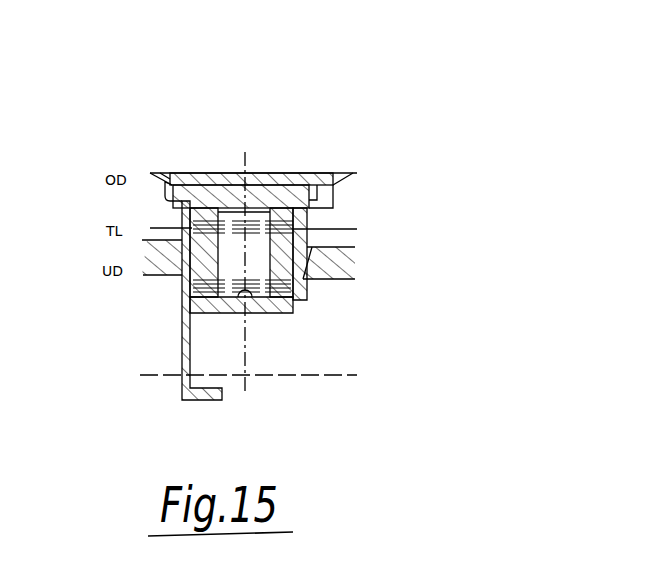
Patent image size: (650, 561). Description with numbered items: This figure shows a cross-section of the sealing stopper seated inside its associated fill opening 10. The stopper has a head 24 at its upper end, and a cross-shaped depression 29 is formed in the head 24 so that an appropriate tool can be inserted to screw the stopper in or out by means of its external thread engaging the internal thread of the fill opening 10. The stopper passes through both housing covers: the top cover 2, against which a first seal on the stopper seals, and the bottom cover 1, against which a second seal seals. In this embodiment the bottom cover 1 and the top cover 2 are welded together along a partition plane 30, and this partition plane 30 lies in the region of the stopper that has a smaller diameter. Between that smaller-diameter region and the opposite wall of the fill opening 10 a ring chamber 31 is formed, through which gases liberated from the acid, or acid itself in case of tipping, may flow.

The bottom cover 1 is at (340, 263).
The top cover 2 is at (337, 170).
The fill opening 10 is at (273, 384).
The head 24 is at (292, 186).
The cross-shaped depression 29 is at (218, 175).
The partition plane 30 is at (337, 226).
The ring chamber 31 is at (185, 240).